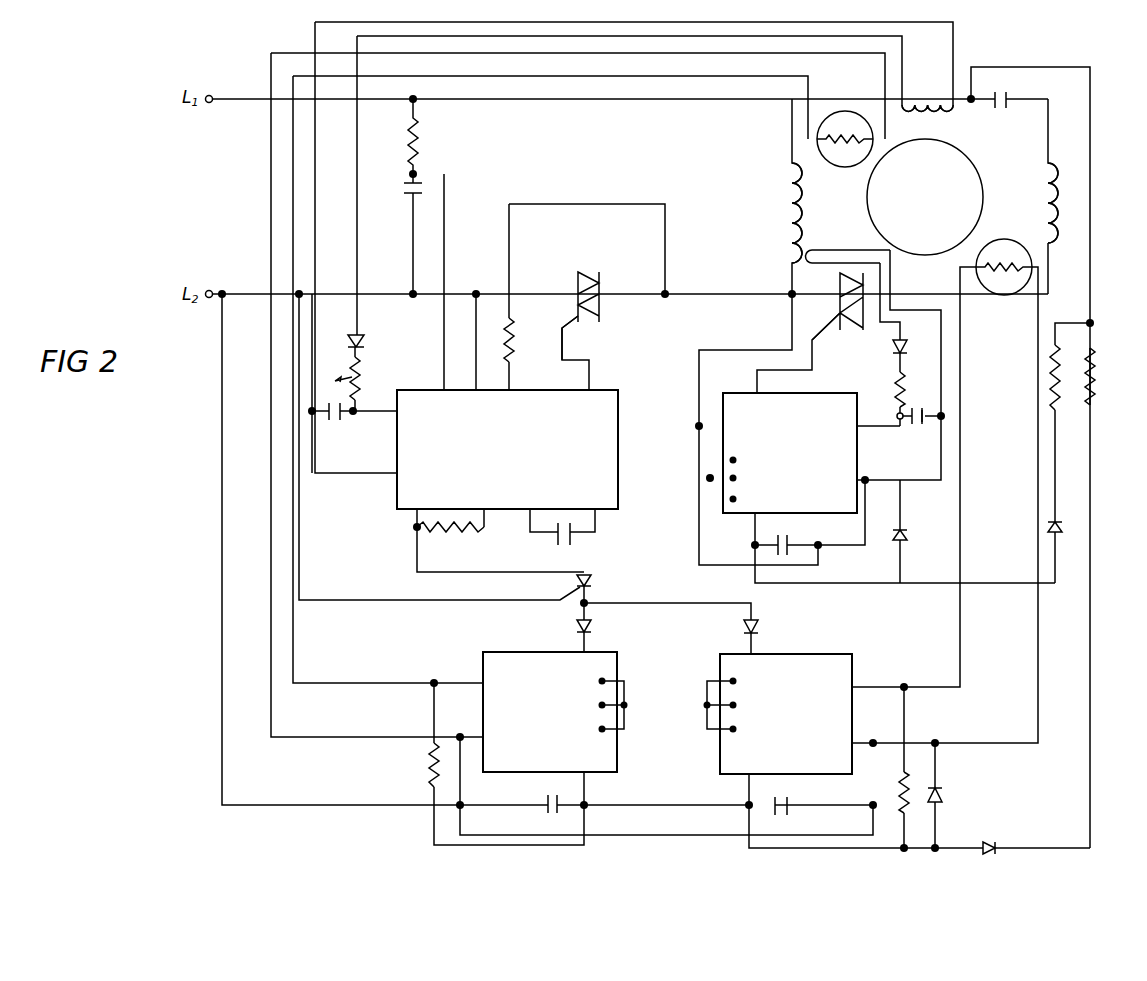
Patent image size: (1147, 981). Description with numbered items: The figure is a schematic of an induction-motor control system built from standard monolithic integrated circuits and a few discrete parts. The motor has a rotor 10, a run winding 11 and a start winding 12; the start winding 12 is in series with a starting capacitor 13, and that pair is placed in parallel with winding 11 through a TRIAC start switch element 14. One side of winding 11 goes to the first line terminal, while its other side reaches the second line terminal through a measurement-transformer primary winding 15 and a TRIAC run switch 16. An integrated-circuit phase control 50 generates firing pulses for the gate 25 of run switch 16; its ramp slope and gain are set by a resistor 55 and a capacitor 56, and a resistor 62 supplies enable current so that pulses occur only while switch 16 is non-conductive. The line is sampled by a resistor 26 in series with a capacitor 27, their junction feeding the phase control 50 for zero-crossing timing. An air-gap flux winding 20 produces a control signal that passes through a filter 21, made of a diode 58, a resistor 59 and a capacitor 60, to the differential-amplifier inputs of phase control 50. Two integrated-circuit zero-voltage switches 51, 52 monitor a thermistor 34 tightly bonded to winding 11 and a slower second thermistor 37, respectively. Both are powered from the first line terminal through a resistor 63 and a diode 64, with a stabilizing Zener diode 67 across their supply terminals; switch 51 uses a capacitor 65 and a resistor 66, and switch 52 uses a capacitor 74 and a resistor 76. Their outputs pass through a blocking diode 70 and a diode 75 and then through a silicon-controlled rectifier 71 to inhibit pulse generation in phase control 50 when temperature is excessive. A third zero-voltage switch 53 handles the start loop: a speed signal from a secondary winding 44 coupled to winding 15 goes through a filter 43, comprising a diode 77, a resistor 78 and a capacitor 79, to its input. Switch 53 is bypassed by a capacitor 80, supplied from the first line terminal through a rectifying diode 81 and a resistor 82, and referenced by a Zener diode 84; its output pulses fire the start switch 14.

The rotor 10 is at (986, 165).
The run winding 11 is at (804, 208).
The start winding 12 is at (1052, 244).
The starting capacitor 13 is at (1008, 96).
The start switch element 14 is at (837, 286).
The measurement-transformer primary winding 15 is at (787, 258).
The run switch 16 is at (602, 276).
The winding 20 is at (951, 113).
The time-delay filter and rectifier 21 is at (361, 377).
The gate 25 is at (566, 342).
The resistor 26 is at (418, 145).
The capacitor 27 is at (404, 193).
The thermistor 34 is at (838, 166).
The second thermistor 37 is at (1006, 298).
The filter 43 is at (931, 414).
The secondary winding 44 is at (820, 256).
The PA-436 integrated-circuit phase control 50 is at (536, 389).
The PA-424 integrated-circuit zero-voltage switch 51 is at (608, 772).
The PA-424 integrated-circuit zero-voltage switch 52 is at (720, 774).
The PA-424 integrated-circuit zero-voltage switch 53 is at (840, 512).
The resistor 55 is at (452, 530).
The capacitor 56 is at (544, 536).
The diode 58 is at (364, 341).
The resistor 59 is at (355, 411).
The capacitor 60 is at (334, 422).
The resistor 62 is at (513, 332).
The resistor 63 is at (1094, 387).
The diode 64 is at (986, 840).
The capacitor 65 is at (544, 802).
The resistor 66 is at (427, 778).
The stabilizing Zener diode 67 is at (944, 794).
The blocking diode 70 is at (591, 628).
The silicon-controlled rectifier 71 is at (591, 586).
The capacitor 74 is at (788, 801).
The diode 75 is at (758, 626).
The resistor 76 is at (898, 780).
The diode 77 is at (892, 346).
The resistor 78 is at (893, 393).
The capacitor 79 is at (918, 426).
The capacitor 80 is at (780, 541).
The rectifying diode 81 is at (1063, 529).
The resistor 82 is at (1050, 372).
The reference Zener diode 84 is at (904, 532).